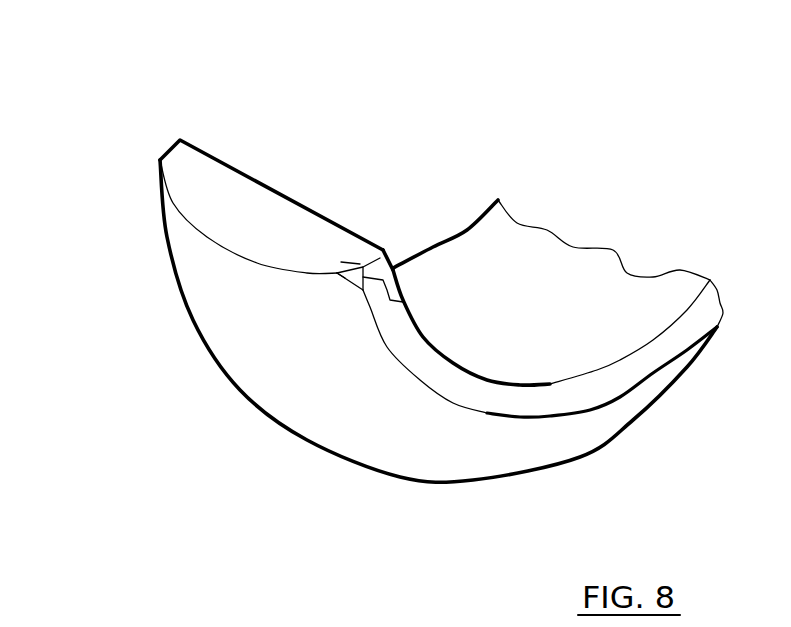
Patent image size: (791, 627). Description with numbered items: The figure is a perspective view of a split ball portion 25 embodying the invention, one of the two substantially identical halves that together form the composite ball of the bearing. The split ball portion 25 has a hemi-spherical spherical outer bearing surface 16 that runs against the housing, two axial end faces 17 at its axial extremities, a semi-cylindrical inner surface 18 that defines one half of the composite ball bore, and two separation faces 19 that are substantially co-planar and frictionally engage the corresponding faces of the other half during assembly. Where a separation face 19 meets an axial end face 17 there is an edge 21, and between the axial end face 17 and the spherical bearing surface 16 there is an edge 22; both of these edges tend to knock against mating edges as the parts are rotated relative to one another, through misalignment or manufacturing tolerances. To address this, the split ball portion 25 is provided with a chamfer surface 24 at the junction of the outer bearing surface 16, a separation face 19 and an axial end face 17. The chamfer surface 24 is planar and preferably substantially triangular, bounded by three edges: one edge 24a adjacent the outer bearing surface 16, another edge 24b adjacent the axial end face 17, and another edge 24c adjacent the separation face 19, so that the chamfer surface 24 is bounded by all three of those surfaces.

The spherical outer bearing surface 16 is at (233, 348).
The axial end face 17 is at (563, 403).
The semi-cylindrical inner surface 18 is at (497, 267).
The separation face 19 is at (222, 183).
The edge of the separation face 21 is at (375, 262).
The edge between axial end face and spherical bearing surface 22 is at (470, 410).
The chamfer surface 24 is at (355, 278).
The edge of chamfer surface adjacent outer bearing surface 24a is at (357, 268).
The edge of chamfer surface adjacent axial end face 24b is at (480, 312).
The edge of chamfer surface adjacent separation face 24c is at (341, 262).
The split ball portion 25 is at (363, 130).